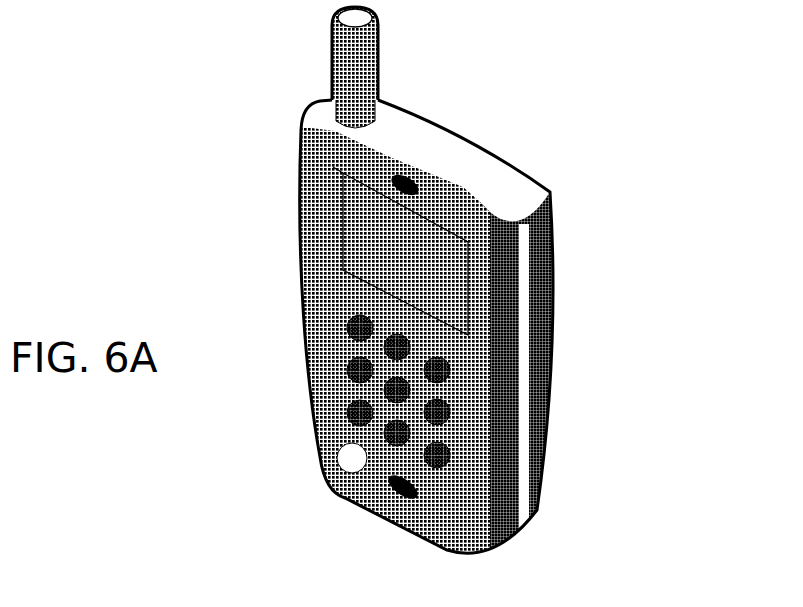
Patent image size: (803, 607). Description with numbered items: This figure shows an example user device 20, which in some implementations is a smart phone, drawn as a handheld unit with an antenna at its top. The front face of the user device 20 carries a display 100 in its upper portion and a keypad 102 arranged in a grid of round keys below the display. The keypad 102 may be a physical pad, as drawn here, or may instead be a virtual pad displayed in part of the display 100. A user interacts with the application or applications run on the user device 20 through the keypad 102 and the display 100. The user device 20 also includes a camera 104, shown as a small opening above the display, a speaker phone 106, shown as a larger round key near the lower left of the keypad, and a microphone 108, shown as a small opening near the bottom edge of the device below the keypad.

The user device 20 is at (240, 122).
The display 100 is at (405, 254).
The keypad 102 is at (462, 437).
The camera 104 is at (413, 187).
The speaker phone 106 is at (333, 455).
The microphone 108 is at (402, 494).